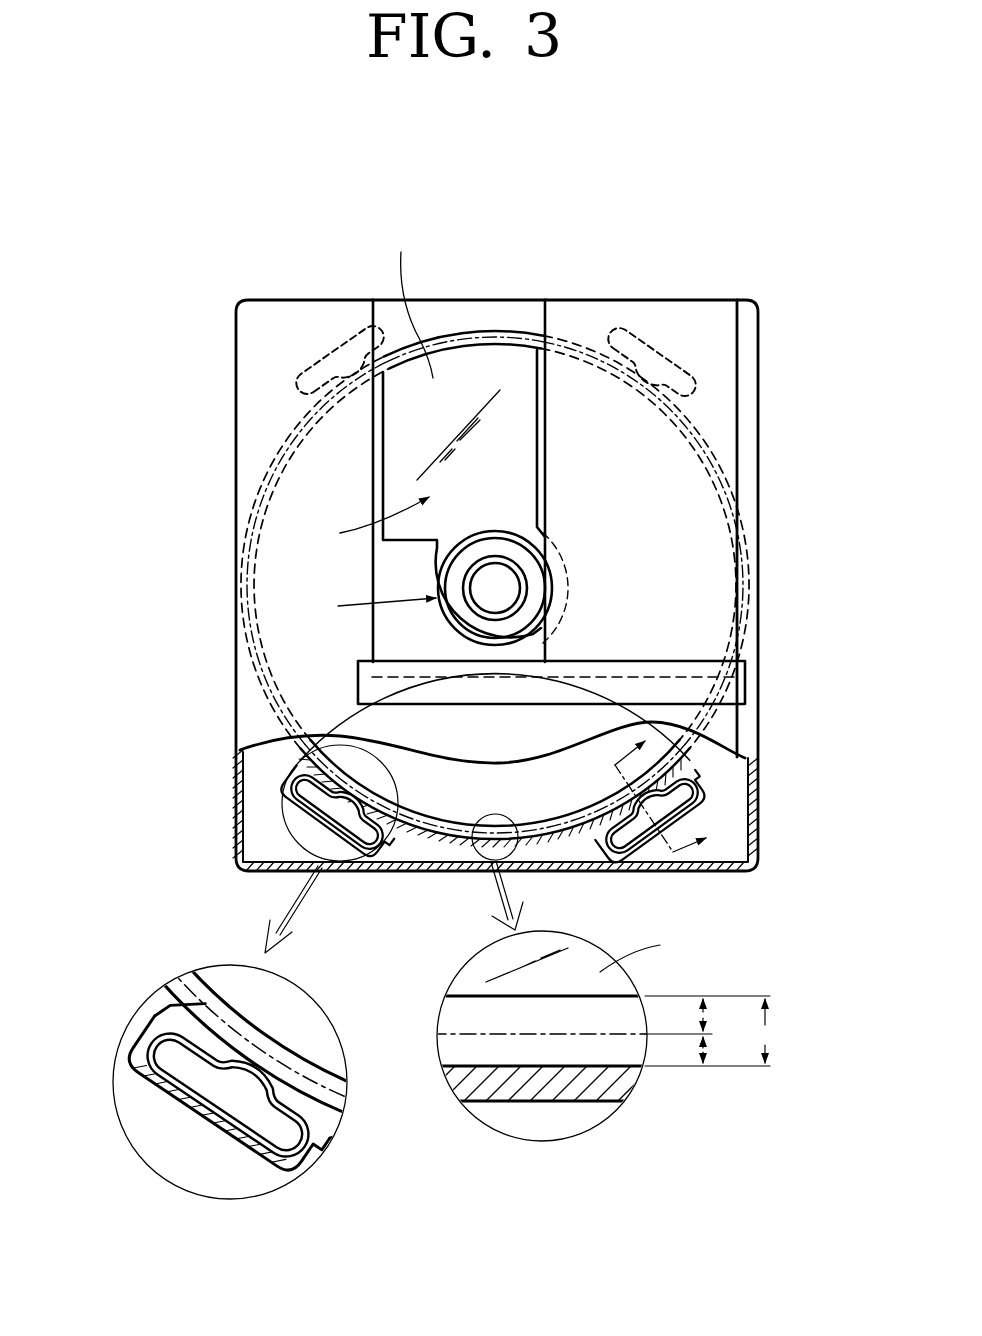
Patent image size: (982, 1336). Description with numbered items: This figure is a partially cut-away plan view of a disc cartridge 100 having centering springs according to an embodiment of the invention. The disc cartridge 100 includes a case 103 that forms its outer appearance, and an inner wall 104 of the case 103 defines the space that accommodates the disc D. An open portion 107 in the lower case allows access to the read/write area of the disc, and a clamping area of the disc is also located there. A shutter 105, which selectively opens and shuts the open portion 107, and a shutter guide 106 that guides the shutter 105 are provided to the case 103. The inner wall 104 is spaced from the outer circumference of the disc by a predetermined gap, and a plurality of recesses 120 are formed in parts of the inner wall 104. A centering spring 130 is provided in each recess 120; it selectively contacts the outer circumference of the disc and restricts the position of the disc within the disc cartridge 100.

The disc cartridge 100 is at (448, 698).
The case 103 is at (760, 371).
The inner wall 104 is at (722, 467).
The shutter 105 is at (611, 313).
The shutter guide 106 is at (745, 690).
The open portion 107 is at (481, 320).
The recess 120 is at (217, 1040).
The centering spring 130 is at (340, 350).